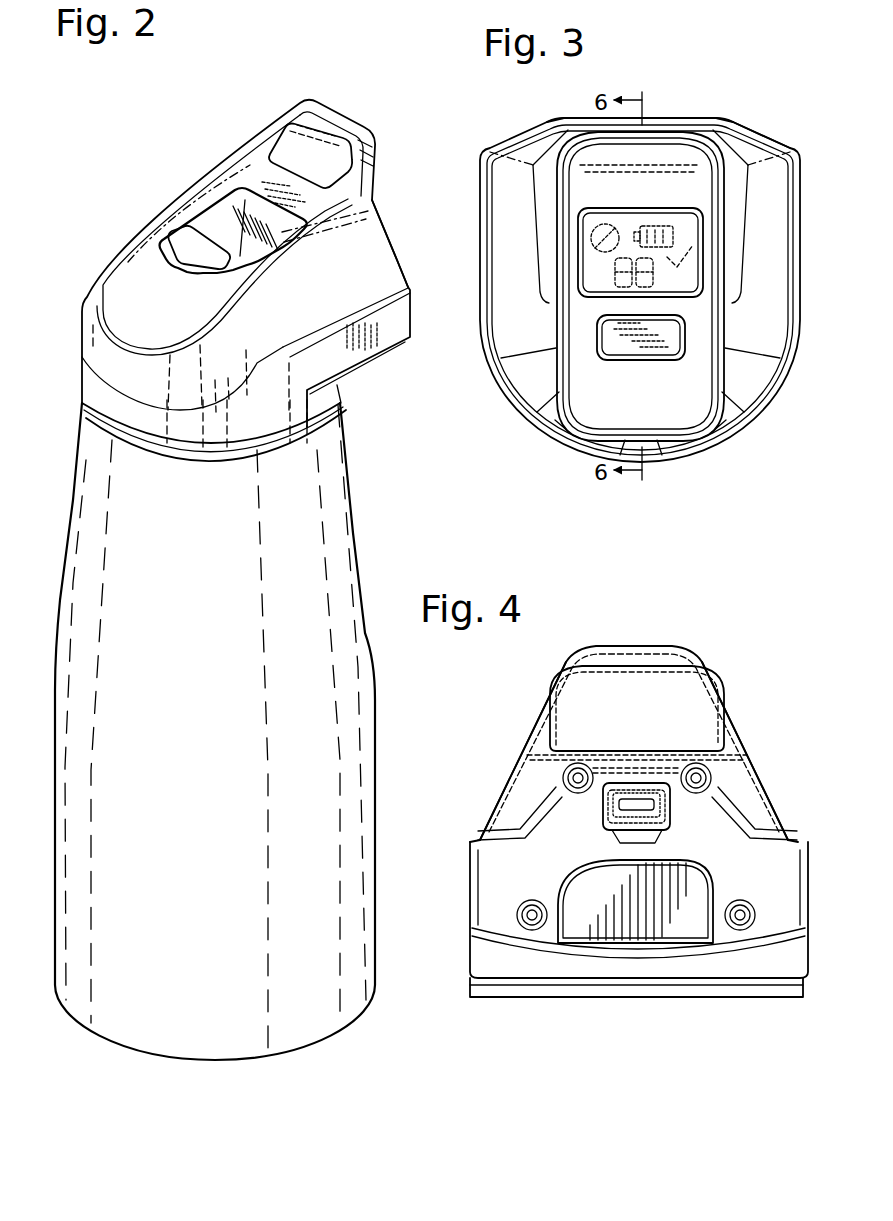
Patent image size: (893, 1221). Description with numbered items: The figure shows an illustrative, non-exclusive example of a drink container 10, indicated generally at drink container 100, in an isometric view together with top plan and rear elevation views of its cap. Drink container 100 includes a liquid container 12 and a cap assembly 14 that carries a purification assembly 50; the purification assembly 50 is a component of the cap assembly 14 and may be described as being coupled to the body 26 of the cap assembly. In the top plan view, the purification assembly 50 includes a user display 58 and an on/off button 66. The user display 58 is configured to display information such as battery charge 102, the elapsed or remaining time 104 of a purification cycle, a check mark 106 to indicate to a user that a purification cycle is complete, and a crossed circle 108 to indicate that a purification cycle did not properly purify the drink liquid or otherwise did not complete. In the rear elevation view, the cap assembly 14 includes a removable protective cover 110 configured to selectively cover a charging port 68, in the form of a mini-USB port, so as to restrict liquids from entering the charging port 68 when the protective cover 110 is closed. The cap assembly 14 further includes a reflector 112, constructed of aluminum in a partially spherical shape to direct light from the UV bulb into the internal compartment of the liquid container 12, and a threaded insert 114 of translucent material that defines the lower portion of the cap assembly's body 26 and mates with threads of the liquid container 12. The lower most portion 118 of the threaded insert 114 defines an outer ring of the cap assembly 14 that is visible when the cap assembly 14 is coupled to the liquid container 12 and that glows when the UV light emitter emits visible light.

In FIG. 2, the drink container 10 is at (373, 45).
In FIG. 3, the drink container 10 is at (801, 69).
In FIG. 4, the drink container 10 is at (816, 663).
In FIG. 2, the liquid container 12 is at (73, 552).
In FIG. 2, the cap assembly 14 is at (408, 211).
In FIG. 3, the cap assembly 14 is at (822, 112).
In FIG. 4, the cap assembly 14 is at (812, 746).
In FIG. 2, the body 26 is at (80, 376).
In FIG. 3, the body 26 is at (731, 122).
In FIG. 4, the body 26 is at (497, 796).
In FIG. 2, the purification assembly 50 is at (400, 259).
In FIG. 3, the purification assembly 50 is at (791, 140).
In FIG. 4, the purification assembly 50 is at (771, 758).
In FIG. 2, the user display 58 is at (226, 195).
In FIG. 3, the user display 58 is at (608, 298).
In FIG. 2, the on/off button 66 is at (185, 248).
In FIG. 3, the on/off button 66 is at (626, 348).
In FIG. 4, the charging port 68 is at (620, 826).
In FIG. 2, the drink container 100 is at (373, 91).
In FIG. 3, the drink container 100 is at (749, 96).
In FIG. 4, the drink container 100 is at (766, 686).
In FIG. 3, the battery charge 102 is at (651, 210).
In FIG. 3, the elapsed or remaining time 104 is at (623, 290).
In FIG. 3, the check mark 106 is at (684, 263).
In FIG. 3, the crossed circle 108 is at (607, 199).
In FIG. 4, the removable protective cover 110 is at (678, 802).
In FIG. 4, the reflector 112 is at (466, 880).
In FIG. 4, the threaded insert 114 is at (493, 887).
In FIG. 4, the lower most portion 118 is at (806, 990).